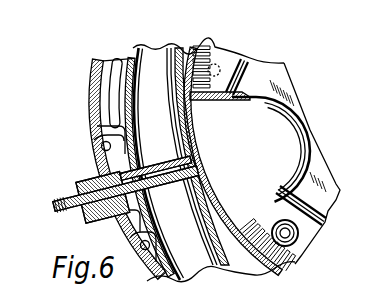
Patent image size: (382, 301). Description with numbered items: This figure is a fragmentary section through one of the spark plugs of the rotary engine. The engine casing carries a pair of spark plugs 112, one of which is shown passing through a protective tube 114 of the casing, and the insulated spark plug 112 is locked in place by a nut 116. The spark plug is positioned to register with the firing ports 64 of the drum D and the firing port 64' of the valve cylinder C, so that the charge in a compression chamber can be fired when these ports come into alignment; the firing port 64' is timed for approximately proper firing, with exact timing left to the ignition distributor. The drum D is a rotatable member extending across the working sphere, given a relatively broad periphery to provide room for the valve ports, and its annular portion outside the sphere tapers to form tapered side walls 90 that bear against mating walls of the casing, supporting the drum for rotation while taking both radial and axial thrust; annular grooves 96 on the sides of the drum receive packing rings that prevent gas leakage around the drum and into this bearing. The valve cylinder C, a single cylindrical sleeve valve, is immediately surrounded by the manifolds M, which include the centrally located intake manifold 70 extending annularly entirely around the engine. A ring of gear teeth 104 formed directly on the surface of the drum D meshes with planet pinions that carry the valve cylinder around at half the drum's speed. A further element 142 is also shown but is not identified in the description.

The manifolds M is at (150, 101).
The intake manifold 70 is at (152, 127).
The nut 116 is at (88, 173).
The spark plugs 112 is at (70, 193).
The protective tube 114 is at (143, 218).
The ring of gear teeth 104 is at (207, 50).
The tapered side walls 90 is at (229, 68).
The annular grooves 96 is at (238, 62).
The valve cylinder C is at (188, 128).
The drum D is at (315, 180).
The firing ports 64 is at (233, 161).
The firing port 64' is at (213, 156).
The pin 142 is at (286, 234).